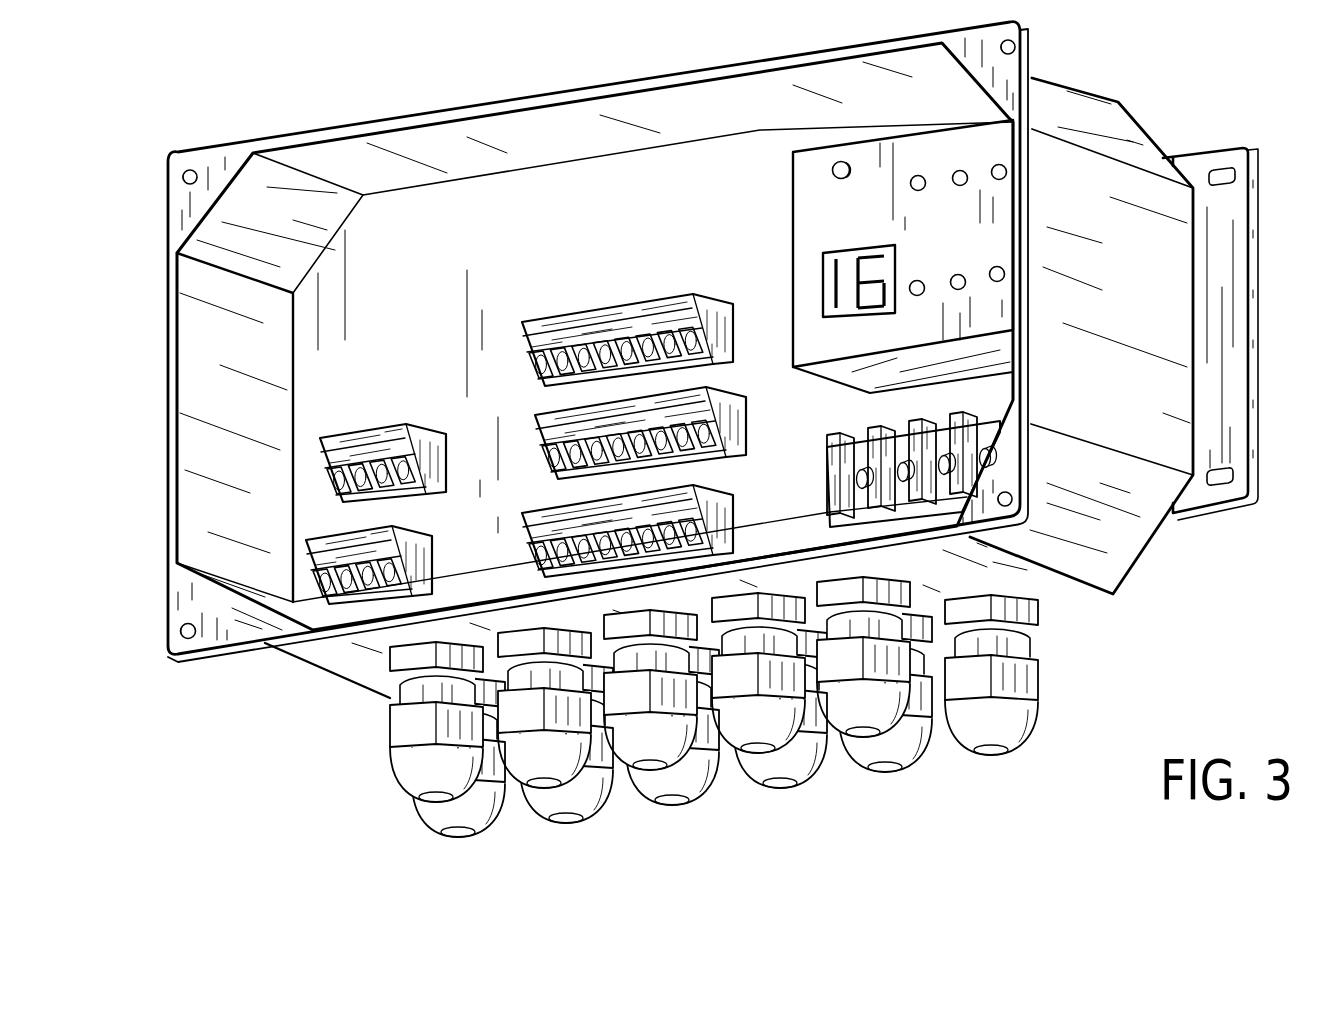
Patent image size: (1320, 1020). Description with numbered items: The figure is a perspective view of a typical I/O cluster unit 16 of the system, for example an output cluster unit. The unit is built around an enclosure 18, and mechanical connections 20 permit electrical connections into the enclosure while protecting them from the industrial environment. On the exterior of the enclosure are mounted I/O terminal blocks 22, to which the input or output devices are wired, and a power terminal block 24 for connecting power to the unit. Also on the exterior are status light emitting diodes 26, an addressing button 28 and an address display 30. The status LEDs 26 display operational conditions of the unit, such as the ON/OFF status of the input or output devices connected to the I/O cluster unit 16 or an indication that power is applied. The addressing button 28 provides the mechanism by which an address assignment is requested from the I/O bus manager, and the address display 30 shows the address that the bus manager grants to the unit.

The I/O cluster unit 16 is at (547, 80).
The enclosure 18 is at (1098, 513).
The mechanical connections 20 is at (1017, 682).
The I/O terminal blocks 22 is at (608, 304).
The power terminal block 24 is at (968, 414).
The status light emitting diodes 26 is at (919, 192).
The addressing button 28 is at (832, 170).
The address display 30 is at (823, 273).